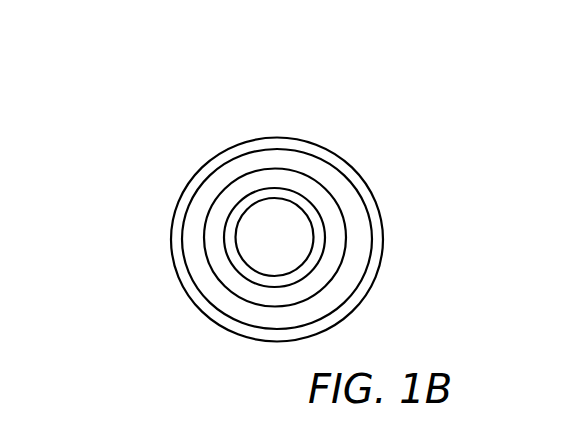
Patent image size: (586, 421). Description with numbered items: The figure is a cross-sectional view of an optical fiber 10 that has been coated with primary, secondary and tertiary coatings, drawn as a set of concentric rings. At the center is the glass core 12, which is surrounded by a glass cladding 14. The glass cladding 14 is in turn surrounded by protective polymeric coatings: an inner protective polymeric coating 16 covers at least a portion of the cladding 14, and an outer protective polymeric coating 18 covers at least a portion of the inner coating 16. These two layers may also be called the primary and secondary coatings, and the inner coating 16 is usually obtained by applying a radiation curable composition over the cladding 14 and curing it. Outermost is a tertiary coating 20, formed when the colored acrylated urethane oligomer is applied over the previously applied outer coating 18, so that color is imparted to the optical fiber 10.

The optical fiber 10 is at (233, 102).
The glass core 12 is at (275, 238).
The glass cladding 14 is at (317, 243).
The inner protective polymeric coating 16 is at (317, 279).
The outer protective polymeric coating 18 is at (327, 300).
The tertiary coating 20 is at (171, 239).